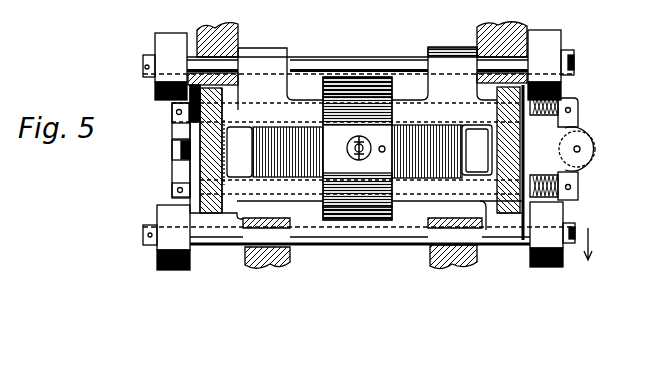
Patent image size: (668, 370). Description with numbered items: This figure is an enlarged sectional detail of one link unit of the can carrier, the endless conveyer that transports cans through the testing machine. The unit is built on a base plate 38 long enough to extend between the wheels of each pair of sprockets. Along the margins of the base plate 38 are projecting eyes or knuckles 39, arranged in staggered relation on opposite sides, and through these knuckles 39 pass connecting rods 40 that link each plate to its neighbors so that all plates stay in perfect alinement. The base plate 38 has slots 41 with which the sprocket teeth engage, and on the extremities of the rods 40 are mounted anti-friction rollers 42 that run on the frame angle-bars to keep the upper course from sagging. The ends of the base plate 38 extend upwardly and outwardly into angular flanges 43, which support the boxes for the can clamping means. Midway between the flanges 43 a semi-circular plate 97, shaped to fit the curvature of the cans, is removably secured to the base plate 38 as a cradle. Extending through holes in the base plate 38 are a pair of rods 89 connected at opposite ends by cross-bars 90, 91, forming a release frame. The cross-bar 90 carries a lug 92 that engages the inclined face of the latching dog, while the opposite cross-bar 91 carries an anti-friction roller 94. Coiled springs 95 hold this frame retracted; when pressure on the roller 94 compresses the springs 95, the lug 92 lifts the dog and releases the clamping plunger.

The base plate 38 is at (418, 158).
The knuckles 39 is at (472, 47).
The connecting rods 40 is at (362, 52).
The slots 41 is at (245, 152).
The anti-friction rollers 42 is at (172, 34).
The angular flanges 43 is at (504, 153).
The rods 89 is at (170, 113).
The cross-bar 90 is at (173, 130).
The cross-bar 91 is at (580, 127).
The lug 92 is at (175, 157).
The anti-friction roller 94 is at (594, 160).
The coiled springs 95 is at (548, 172).
The semi-circular plate 97 is at (333, 166).